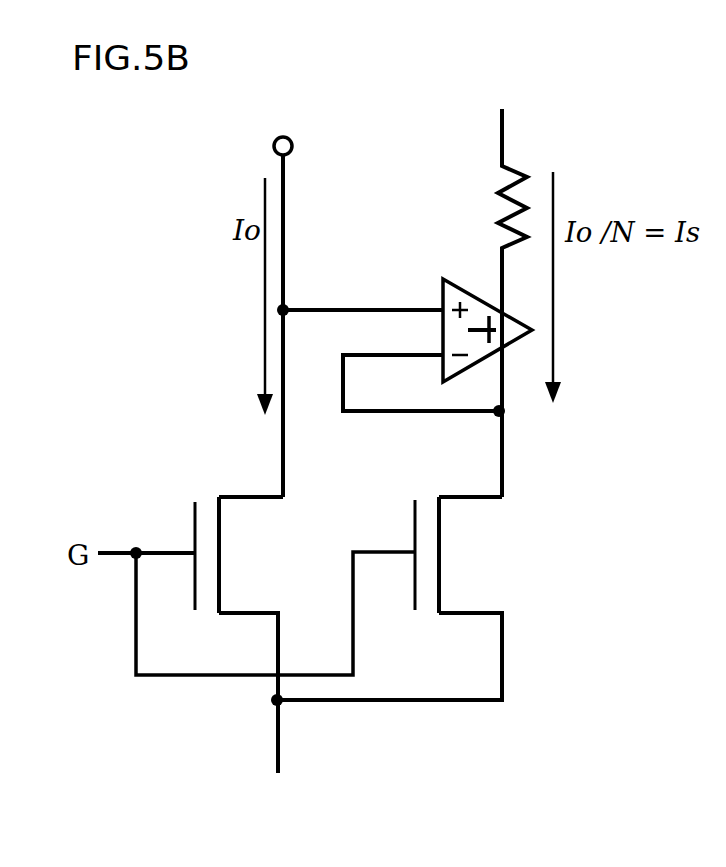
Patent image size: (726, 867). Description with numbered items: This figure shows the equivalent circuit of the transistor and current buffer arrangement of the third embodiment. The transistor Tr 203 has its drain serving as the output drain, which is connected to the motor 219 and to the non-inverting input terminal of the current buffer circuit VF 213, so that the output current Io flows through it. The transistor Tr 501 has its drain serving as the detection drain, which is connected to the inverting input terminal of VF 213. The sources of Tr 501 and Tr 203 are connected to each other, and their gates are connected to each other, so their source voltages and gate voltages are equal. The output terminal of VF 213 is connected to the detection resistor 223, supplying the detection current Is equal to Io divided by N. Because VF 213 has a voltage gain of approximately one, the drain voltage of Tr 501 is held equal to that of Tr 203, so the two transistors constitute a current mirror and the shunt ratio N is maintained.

The motor 219 is at (301, 126).
The detection resistor 223 is at (490, 194).
The current buffer circuit VF 213 is at (434, 297).
The transistor Tr 203 is at (206, 498).
The transistor Tr 501 is at (520, 508).